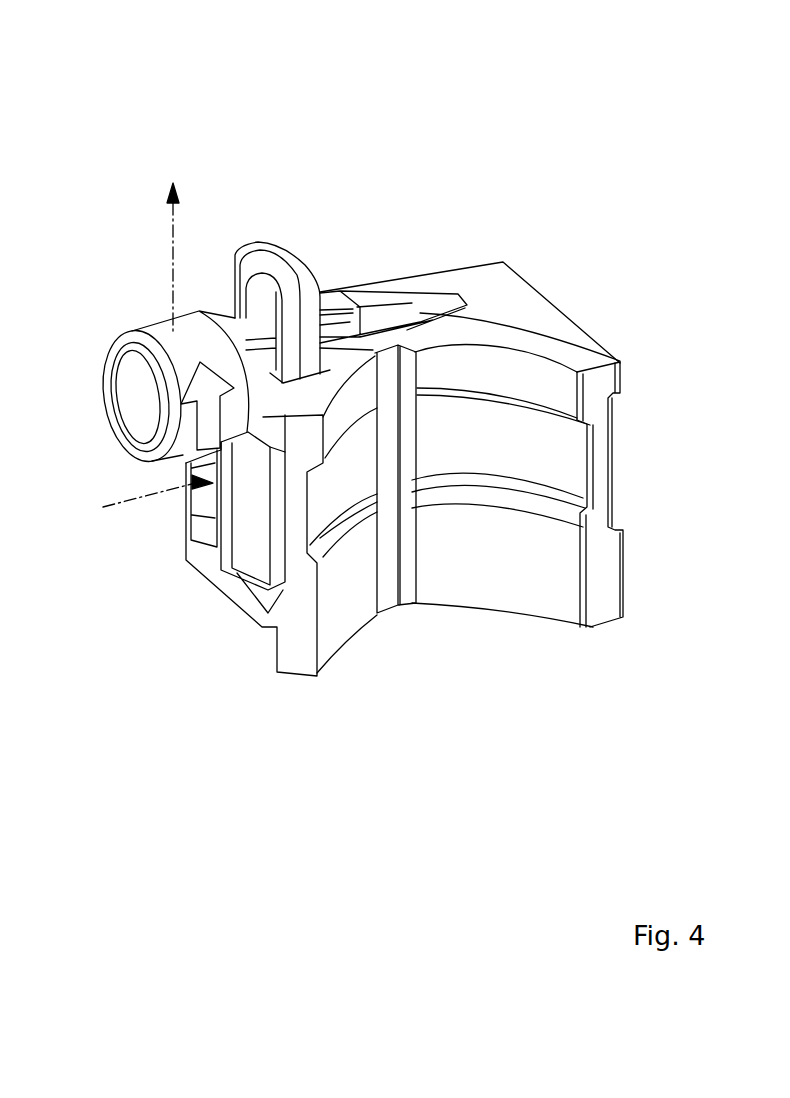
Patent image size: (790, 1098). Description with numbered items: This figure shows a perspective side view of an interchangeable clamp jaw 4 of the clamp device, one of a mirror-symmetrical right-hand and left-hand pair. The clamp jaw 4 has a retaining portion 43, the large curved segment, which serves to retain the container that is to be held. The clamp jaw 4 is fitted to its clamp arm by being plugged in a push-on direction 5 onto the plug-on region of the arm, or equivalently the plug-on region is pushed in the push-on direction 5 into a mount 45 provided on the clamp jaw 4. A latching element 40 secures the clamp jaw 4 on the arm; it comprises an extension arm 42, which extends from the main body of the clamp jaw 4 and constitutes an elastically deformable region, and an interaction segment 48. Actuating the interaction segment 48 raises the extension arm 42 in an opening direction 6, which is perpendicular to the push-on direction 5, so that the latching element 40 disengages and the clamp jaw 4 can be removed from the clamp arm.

The clamp jaw 4 is at (112, 83).
The push-on direction 5 is at (138, 494).
The opening direction 6 is at (155, 248).
The latching element 40 is at (327, 332).
The extension arm 42 is at (340, 252).
The retaining portion 43 is at (463, 535).
The mount 45 is at (212, 490).
The interaction segment 48 is at (142, 388).